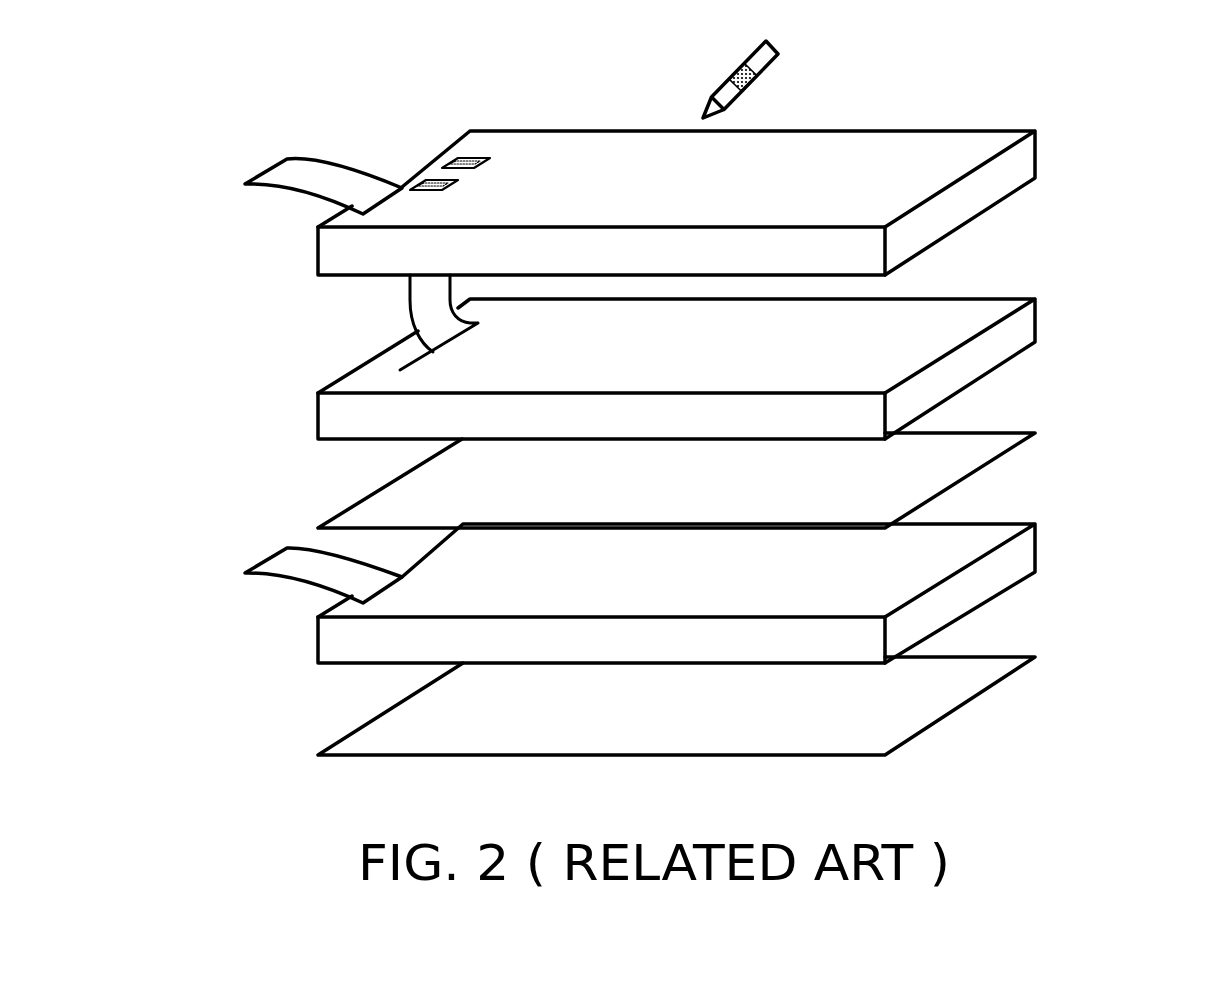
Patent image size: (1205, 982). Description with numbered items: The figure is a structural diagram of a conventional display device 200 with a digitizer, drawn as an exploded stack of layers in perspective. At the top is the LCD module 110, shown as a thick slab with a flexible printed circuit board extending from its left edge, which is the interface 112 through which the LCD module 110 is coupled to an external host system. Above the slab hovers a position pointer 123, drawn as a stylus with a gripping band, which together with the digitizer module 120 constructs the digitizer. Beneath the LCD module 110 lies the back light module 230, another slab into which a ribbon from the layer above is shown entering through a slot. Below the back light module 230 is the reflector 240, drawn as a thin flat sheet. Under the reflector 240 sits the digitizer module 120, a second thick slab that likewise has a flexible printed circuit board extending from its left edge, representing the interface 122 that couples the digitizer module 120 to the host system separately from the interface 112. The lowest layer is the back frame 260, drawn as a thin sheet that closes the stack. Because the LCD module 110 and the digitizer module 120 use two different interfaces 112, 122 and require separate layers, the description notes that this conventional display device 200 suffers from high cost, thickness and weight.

The LCD module 110 is at (973, 148).
The interface 112 is at (322, 170).
The digitizer module 120 is at (973, 538).
The interface 122 is at (295, 558).
The position pointer 123 is at (751, 81).
The display device 200 is at (1170, 720).
The back light module 230 is at (973, 313).
The reflector 240 is at (973, 448).
The back frame 260 is at (973, 673).